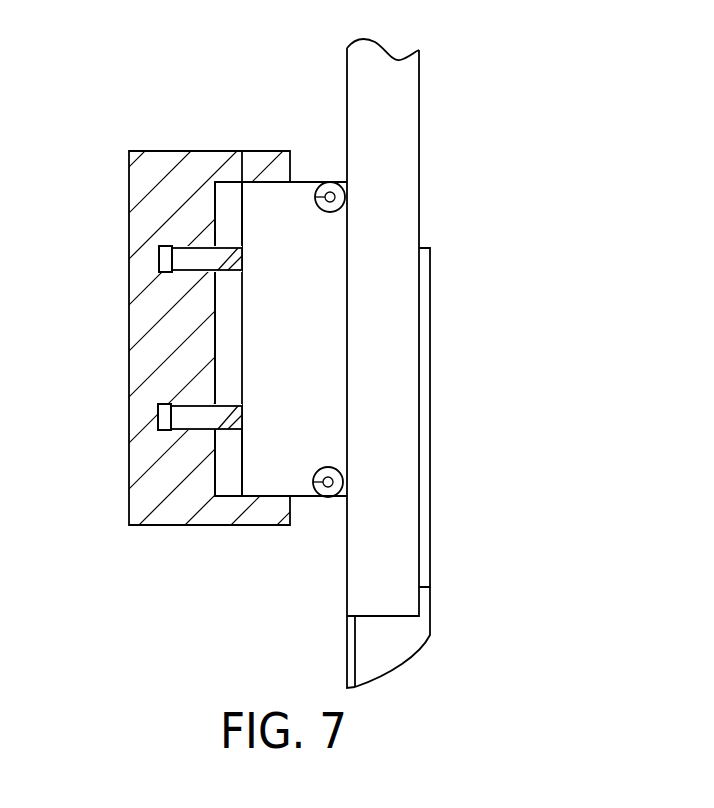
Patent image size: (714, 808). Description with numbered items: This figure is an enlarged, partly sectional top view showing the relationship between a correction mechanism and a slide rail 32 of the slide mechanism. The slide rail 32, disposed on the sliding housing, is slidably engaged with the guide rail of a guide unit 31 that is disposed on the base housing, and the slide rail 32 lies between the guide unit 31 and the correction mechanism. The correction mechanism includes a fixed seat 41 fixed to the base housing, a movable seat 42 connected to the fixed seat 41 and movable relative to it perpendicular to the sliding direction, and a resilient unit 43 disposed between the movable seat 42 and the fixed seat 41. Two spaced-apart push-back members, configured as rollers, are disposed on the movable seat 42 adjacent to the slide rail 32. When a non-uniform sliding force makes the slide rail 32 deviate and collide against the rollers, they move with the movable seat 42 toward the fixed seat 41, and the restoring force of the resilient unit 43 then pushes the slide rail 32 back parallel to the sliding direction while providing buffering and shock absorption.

The guide unit 31 is at (423, 430).
The slide rail 32 is at (397, 157).
The fixed seat 41 is at (170, 187).
The movable seat 42 is at (280, 203).
The resilient unit 43 is at (233, 228).